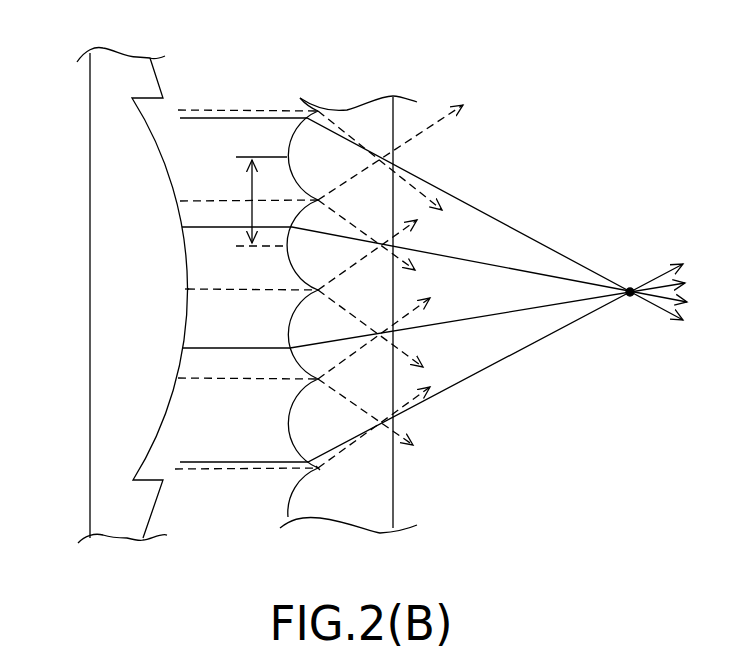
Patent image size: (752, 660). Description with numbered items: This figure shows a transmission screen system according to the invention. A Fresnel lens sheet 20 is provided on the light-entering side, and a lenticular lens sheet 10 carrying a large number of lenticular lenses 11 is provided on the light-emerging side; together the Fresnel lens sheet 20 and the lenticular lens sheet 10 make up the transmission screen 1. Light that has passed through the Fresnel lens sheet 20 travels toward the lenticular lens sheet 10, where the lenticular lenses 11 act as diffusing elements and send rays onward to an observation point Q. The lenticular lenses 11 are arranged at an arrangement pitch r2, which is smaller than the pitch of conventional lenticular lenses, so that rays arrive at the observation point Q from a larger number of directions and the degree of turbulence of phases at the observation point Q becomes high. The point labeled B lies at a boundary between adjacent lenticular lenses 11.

The transmission screen 1 is at (203, 80).
The lenticular lens sheet 10 is at (333, 288).
The lenticular lenses 11 is at (307, 150).
The Fresnel lens sheet 20 is at (110, 285).
The arrangement pitch of the lenticular lenses r2 is at (248, 188).
The observation point Q is at (630, 300).
The boundary point between lens elements B is at (319, 484).